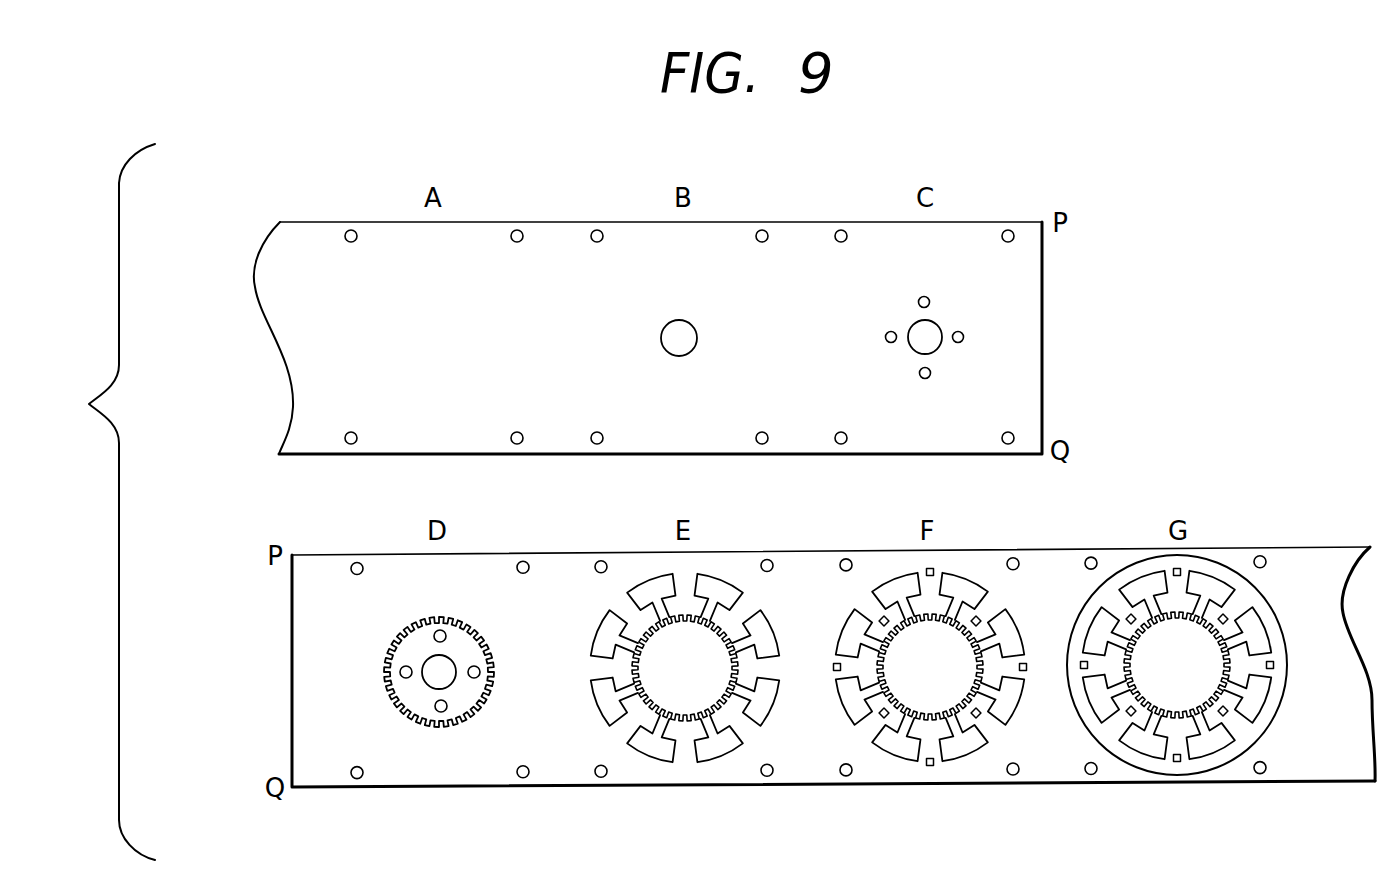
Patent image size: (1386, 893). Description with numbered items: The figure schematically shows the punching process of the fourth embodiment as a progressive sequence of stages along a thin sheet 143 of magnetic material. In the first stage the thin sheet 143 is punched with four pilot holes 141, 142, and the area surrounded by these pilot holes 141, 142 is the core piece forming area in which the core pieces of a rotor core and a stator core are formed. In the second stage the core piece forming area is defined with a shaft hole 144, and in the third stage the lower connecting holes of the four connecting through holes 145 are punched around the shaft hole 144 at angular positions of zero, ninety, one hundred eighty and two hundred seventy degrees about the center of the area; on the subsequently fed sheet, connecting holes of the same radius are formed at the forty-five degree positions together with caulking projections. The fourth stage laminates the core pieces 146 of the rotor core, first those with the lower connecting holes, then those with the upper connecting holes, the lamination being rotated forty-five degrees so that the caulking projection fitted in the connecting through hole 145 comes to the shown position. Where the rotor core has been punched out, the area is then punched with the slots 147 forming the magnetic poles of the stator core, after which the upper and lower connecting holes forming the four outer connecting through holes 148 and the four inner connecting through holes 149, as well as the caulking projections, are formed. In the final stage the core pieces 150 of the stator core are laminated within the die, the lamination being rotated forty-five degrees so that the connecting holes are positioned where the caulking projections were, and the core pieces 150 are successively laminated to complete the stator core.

The pilot hole 141 is at (721, 536).
The pilot hole 142 is at (888, 495).
The thin sheet 143 is at (270, 265).
The center hole 144 is at (832, 319).
The connecting through hole 145 is at (664, 542).
The core piece of the rotor core 146 is at (395, 703).
The slot 147 is at (931, 720).
The connecting through hole 148 is at (1033, 645).
The connecting through hole 149 is at (1050, 675).
The core piece of the stator core 150 is at (1275, 710).